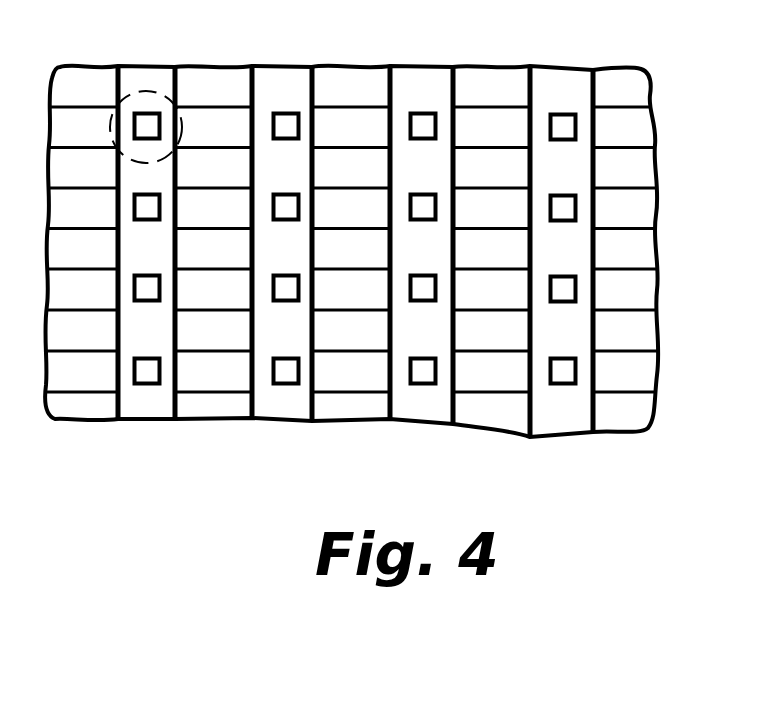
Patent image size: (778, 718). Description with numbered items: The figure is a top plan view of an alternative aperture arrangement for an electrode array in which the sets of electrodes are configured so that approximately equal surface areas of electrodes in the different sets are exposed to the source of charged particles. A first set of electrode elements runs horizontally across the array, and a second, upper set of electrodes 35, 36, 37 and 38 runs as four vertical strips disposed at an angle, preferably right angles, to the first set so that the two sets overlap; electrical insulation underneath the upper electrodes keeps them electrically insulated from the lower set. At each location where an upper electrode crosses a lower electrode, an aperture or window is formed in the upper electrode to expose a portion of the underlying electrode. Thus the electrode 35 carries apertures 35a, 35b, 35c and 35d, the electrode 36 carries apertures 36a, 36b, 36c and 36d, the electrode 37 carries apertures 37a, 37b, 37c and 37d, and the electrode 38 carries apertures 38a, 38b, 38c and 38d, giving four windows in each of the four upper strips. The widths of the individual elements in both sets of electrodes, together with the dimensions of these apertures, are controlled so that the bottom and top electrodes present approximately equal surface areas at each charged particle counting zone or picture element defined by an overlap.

The electrode 35 is at (142, 70).
The electrode 36 is at (280, 70).
The electrode 37 is at (430, 72).
The electrode 38 is at (573, 72).
The aperture 35a is at (148, 112).
The aperture 35b is at (160, 195).
The aperture 35c is at (158, 276).
The aperture 35d is at (158, 359).
The aperture 36a is at (295, 113).
The aperture 36b is at (290, 195).
The aperture 36c is at (297, 276).
The aperture 36d is at (297, 359).
The aperture 37a is at (430, 113).
The aperture 37b is at (430, 195).
The aperture 37c is at (432, 276).
The aperture 37d is at (432, 359).
The aperture 38a is at (570, 115).
The aperture 38b is at (573, 200).
The aperture 38c is at (570, 278).
The aperture 38d is at (570, 358).